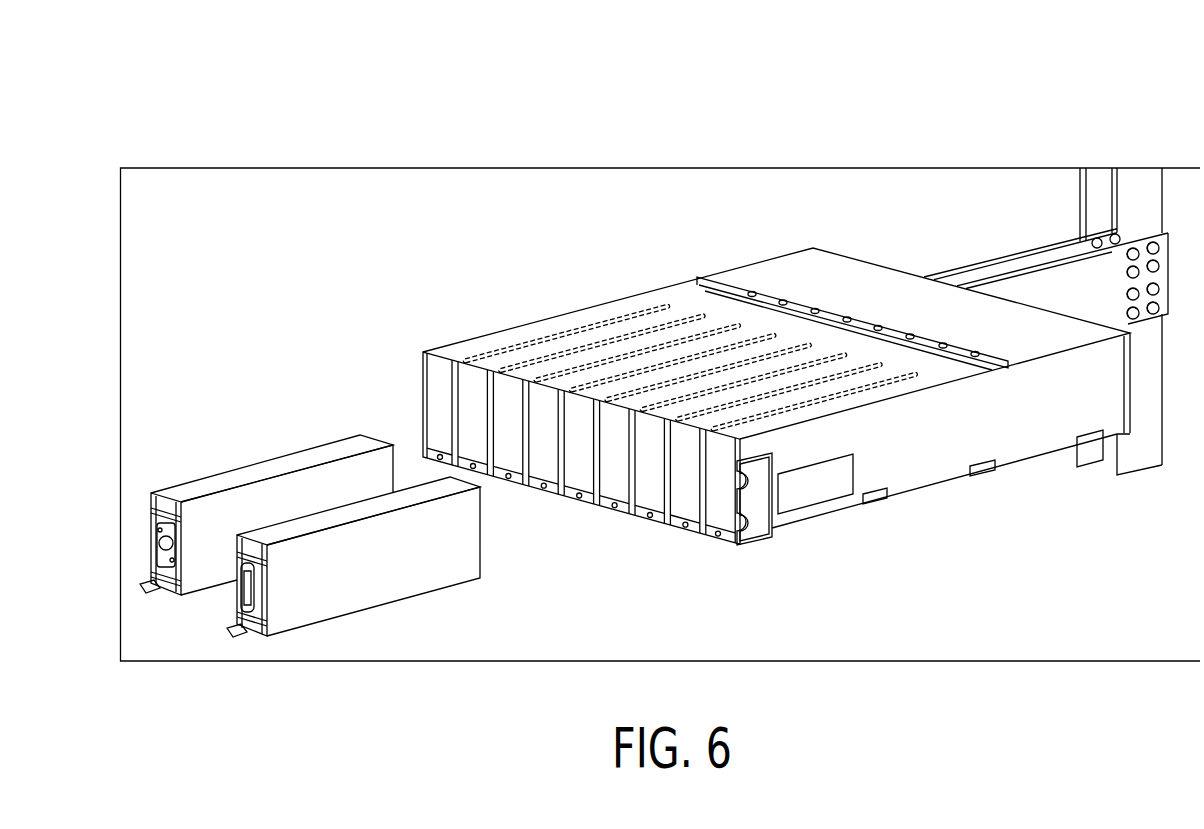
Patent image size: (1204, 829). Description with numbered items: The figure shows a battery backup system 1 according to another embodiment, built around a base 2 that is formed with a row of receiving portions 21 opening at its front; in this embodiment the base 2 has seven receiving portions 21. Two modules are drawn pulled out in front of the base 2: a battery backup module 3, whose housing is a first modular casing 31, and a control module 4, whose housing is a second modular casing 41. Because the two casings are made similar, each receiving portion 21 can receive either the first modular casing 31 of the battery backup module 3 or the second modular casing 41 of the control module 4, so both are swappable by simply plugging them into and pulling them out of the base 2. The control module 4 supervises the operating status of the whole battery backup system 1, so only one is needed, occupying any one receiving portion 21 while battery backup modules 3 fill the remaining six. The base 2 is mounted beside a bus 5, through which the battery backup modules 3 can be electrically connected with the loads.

The battery backup system 1 is at (143, 81).
The base 2 is at (690, 272).
The receiving portions 21 is at (530, 430).
The battery backup module 3 is at (225, 443).
The first modular casing 31 is at (266, 470).
The control module 4 is at (356, 621).
The second modular casing 41 is at (390, 505).
The bus 5 is at (1136, 193).